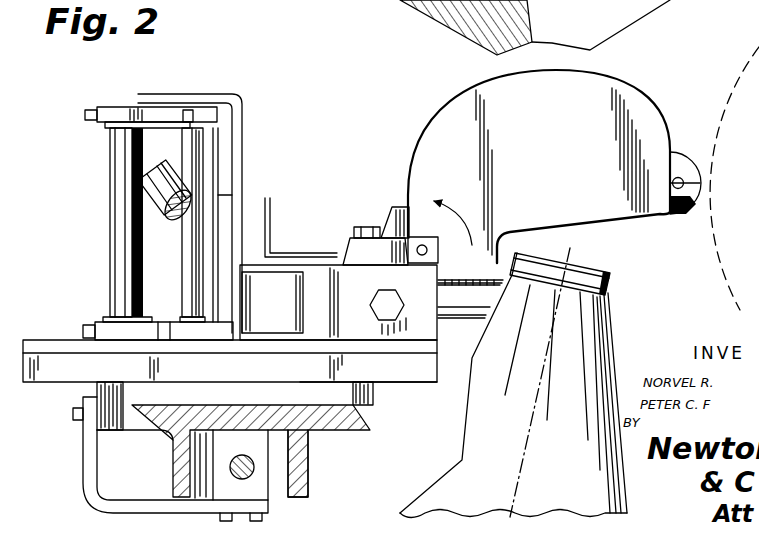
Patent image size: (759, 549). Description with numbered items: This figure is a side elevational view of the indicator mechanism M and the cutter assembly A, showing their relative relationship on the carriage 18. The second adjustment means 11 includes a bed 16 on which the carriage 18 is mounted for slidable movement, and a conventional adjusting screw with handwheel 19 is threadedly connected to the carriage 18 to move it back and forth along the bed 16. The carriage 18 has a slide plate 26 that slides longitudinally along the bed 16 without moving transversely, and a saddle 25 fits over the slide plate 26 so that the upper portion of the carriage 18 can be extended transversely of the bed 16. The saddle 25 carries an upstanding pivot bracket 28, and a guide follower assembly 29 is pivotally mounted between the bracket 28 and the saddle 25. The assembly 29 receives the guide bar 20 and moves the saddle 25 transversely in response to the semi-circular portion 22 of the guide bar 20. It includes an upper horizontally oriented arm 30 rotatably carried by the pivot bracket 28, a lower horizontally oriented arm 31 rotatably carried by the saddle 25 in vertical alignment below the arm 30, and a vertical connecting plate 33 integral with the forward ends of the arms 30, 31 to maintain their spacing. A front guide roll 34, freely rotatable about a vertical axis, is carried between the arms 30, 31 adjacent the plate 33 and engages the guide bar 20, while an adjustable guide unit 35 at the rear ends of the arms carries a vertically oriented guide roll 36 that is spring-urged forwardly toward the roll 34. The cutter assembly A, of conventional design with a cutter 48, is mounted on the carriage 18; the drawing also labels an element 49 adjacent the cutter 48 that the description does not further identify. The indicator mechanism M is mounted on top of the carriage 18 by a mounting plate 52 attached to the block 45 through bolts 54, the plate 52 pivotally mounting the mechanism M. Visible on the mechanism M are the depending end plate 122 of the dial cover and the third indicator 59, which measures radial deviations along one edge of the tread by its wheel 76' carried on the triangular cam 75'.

The indicator mechanism M is at (461, 99).
The end plate 122 is at (590, 143).
The third indicator 59 is at (698, 158).
The triangular cam 75' is at (713, 176).
The wheel 76' is at (710, 205).
The saddle 25 is at (62, 347).
The carriage 18 is at (395, 384).
The slide plate 26 is at (103, 418).
The bed 16 is at (330, 430).
The second adjustment means 11 is at (312, 490).
The adjusting screw with handwheel 19 is at (236, 470).
The block 45 is at (312, 280).
The mounting plate 52 is at (347, 246).
The bolts 54 is at (357, 229).
The arm 49 is at (478, 320).
The cutter 48 is at (610, 275).
The cutter assembly A is at (609, 336).
The lower horizontally oriented arm 31 is at (98, 321).
The upper horizontally oriented arm 30 is at (112, 110).
The guide follower assembly 29 is at (222, 110).
The pivot bracket 28 is at (236, 152).
The vertical connecting plate 33 is at (218, 196).
The front guide roll 34 is at (198, 130).
The adjustable guide unit 35 is at (107, 143).
The guide roll 36 is at (110, 200).
The guide bar 20 is at (176, 165).
The semi-circular portion 22 is at (158, 226).